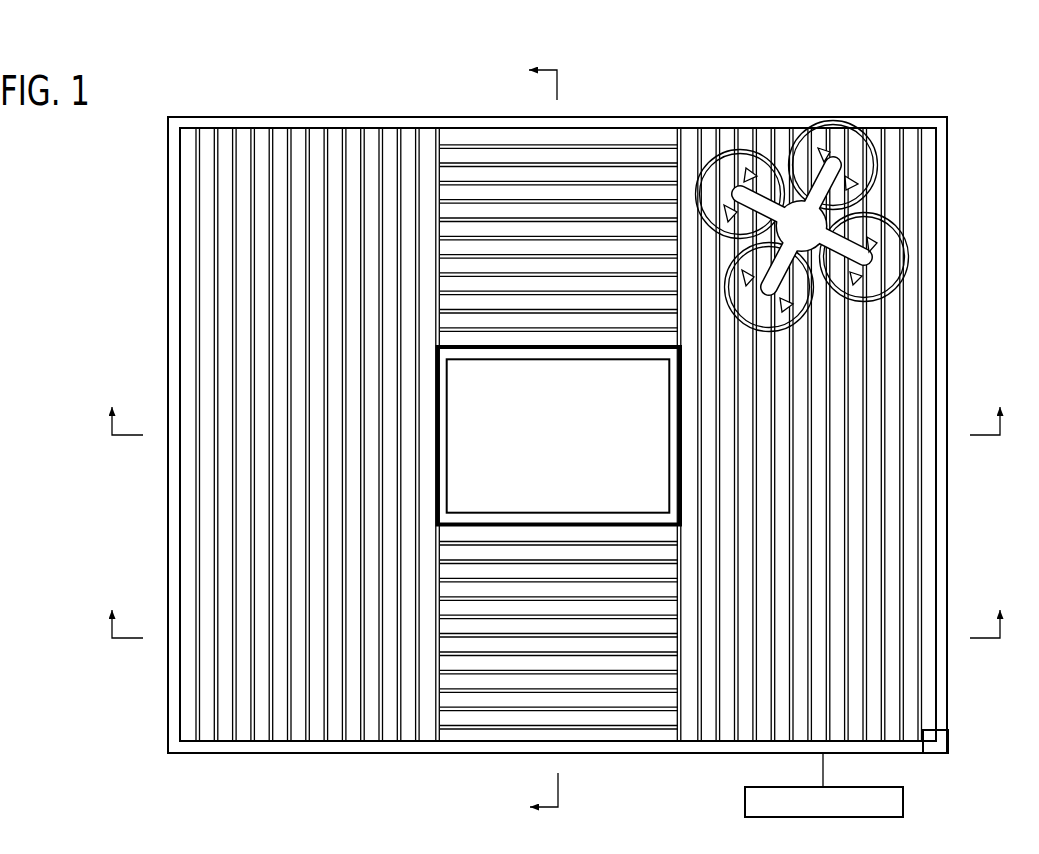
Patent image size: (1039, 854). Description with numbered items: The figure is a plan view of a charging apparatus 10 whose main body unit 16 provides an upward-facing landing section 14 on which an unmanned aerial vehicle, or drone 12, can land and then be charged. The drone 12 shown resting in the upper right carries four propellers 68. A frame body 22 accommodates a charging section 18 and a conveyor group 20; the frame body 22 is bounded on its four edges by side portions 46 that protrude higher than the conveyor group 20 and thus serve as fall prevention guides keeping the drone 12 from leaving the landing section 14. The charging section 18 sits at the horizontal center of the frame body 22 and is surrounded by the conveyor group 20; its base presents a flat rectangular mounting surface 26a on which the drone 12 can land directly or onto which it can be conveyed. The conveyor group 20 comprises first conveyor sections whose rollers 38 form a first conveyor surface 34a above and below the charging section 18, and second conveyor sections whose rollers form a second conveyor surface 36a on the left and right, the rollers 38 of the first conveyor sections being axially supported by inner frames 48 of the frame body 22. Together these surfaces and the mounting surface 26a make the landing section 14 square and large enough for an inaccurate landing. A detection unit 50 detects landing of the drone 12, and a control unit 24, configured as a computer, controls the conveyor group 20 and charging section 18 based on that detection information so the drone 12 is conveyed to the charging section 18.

The charging apparatus 10 is at (41, 171).
The unmanned aerial vehicle (drone) 12 is at (786, 141).
The landing section 14 is at (168, 240).
The main body unit 16 is at (166, 200).
The charging section 18 is at (603, 343).
The conveyor group 20 is at (321, 126).
The frame body 22 is at (175, 308).
The control unit 24 is at (903, 800).
The mounting surface 26a is at (568, 378).
The first conveyor surface 34a is at (465, 137).
The second conveyor surface 36a is at (217, 498).
The rollers 38 is at (708, 728).
The side portions 46 is at (940, 163).
The inner frames 48 is at (679, 138).
The detection unit 50 is at (948, 741).
The propellers 68 is at (859, 129).